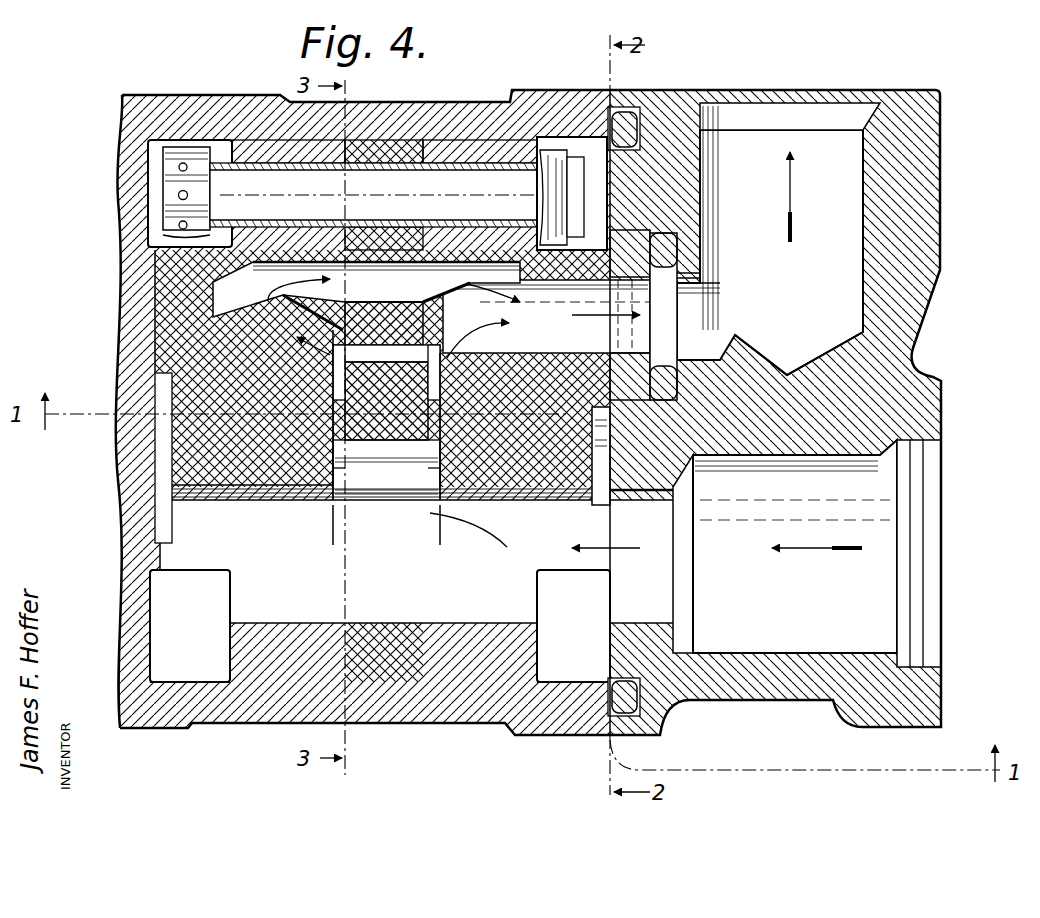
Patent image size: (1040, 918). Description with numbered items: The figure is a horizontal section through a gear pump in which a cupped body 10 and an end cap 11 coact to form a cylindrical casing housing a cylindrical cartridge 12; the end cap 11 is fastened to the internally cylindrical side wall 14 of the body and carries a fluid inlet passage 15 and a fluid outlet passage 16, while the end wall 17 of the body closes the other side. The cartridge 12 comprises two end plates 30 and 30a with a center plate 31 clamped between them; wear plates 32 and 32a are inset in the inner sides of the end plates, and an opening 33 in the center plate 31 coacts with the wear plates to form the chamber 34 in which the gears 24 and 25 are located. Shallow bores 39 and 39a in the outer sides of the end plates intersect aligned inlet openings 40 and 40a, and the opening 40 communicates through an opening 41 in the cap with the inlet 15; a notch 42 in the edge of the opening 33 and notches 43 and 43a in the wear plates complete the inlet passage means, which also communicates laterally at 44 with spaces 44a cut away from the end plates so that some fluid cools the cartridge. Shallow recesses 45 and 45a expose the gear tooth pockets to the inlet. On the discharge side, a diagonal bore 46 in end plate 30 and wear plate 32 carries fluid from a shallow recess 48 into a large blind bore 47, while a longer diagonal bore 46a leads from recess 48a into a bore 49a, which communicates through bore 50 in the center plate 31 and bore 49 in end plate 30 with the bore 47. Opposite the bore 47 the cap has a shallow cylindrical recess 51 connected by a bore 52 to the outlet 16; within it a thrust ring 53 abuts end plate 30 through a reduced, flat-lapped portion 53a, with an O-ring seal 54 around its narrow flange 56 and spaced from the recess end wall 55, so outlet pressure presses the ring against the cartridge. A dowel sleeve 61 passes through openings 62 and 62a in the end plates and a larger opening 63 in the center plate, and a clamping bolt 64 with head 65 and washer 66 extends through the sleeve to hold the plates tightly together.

The cupped body 10 is at (118, 93).
The end cap 11 is at (657, 91).
The cylindrical cartridge 12 is at (152, 315).
The side wall 14 is at (205, 122).
The fluid inlet passage 15 is at (870, 553).
The fluid outlet passage 16 is at (778, 239).
The end wall 17 is at (130, 380).
The gear 24 is at (440, 425).
The gear 25 is at (390, 382).
The end plate 30 is at (487, 143).
The end plate 30a is at (264, 143).
The center plate 31 is at (382, 140).
The wear plate 32 is at (440, 393).
The wear plate 32a is at (333, 400).
The opening 33 is at (363, 340).
The chamber 34 is at (398, 340).
The shallow bore 39 is at (598, 508).
The shallow bore 39a is at (165, 512).
The fluid inlet opening 40 is at (535, 490).
The fluid inlet opening 40a is at (290, 490).
The opening 41 is at (660, 580).
The notch 42 is at (360, 615).
The notch 43 is at (446, 503).
The notch 43a is at (327, 512).
The lateral communication 44 is at (233, 617).
The spaces 44a is at (186, 670).
The shallow recess 45 is at (440, 470).
The shallow recess 45a is at (333, 468).
The diagonal bore 46 is at (546, 319).
The diagonal bore 46a is at (265, 327).
The blind bore 47 is at (588, 337).
The shallow recess 48 is at (440, 378).
The shallow recess 48a is at (333, 387).
The bore 49 is at (462, 260).
The bore 49a is at (298, 258).
The bore 50 is at (387, 260).
The cylindrical recess 51 is at (712, 252).
The bore 52 is at (712, 322).
The thrust ring 53 is at (635, 385).
The reduced-diameter portion 53a is at (628, 247).
The O-ring seal 54 is at (656, 242).
The end wall 55 is at (702, 237).
The flange 56 is at (663, 357).
The dowel sleeve 61 is at (268, 165).
The opening 62 is at (513, 163).
The opening 62a is at (243, 160).
The opening 63 is at (410, 163).
The clamping bolt 64 is at (210, 202).
The head 65 is at (177, 180).
The washer 66 is at (182, 150).